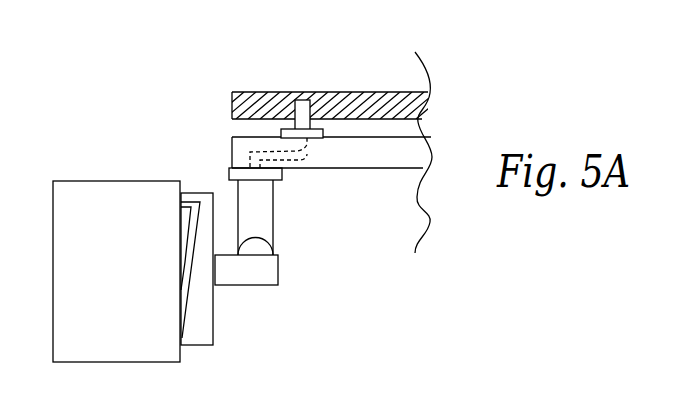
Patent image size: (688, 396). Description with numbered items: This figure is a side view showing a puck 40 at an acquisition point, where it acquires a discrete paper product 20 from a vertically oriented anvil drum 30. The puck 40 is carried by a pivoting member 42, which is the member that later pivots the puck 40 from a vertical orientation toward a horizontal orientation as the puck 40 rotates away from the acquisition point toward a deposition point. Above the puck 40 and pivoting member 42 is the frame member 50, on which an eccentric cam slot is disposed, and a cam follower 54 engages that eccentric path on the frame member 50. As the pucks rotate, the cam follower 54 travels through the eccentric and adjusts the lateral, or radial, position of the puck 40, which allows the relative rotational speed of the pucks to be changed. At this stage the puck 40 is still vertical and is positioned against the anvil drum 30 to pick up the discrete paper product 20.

The discrete paper product 20 is at (185, 199).
The anvil drum 30 is at (107, 207).
The puck 40 is at (208, 196).
The pivoting member 42 is at (263, 222).
The frame member 50 is at (373, 96).
The cam follower 54 is at (302, 101).